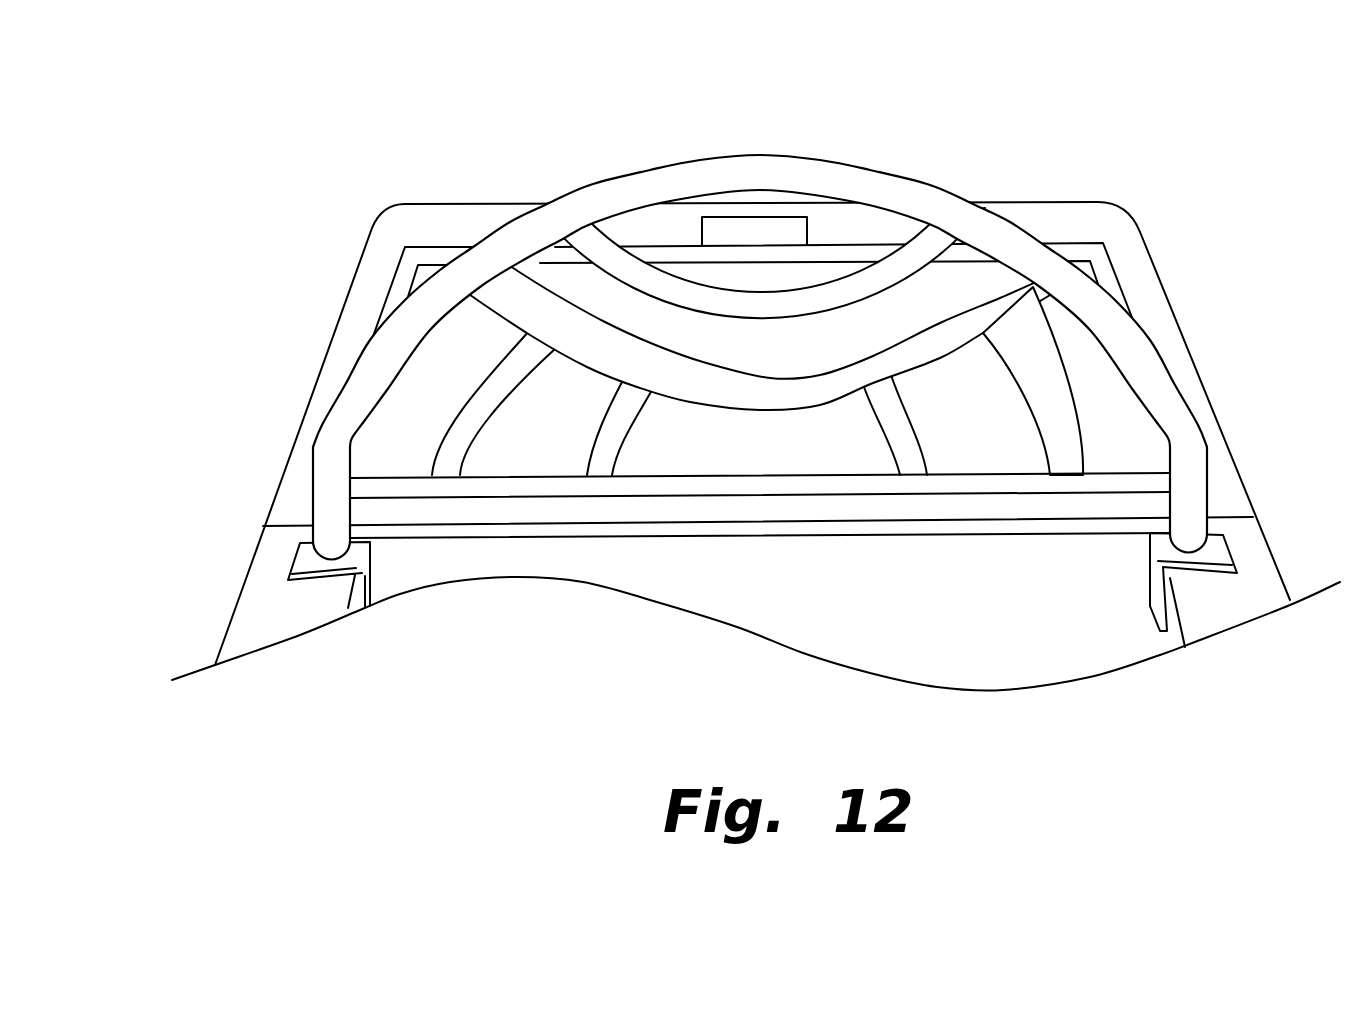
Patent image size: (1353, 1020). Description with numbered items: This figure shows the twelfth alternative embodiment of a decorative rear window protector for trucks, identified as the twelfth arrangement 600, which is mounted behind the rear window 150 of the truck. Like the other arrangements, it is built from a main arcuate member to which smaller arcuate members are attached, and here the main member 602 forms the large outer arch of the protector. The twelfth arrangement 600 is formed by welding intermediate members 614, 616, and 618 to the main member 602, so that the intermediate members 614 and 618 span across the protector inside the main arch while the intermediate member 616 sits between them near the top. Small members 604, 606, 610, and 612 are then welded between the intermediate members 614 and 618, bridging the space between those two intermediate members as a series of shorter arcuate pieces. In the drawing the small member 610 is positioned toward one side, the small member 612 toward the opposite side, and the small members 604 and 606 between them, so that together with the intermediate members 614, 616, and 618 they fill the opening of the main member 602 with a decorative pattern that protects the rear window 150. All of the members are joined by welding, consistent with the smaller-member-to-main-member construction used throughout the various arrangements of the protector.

The rear window 150 is at (1133, 320).
The twelfth arrangement 600 is at (989, 188).
The main arch 602 is at (611, 200).
The small member 604 is at (617, 433).
The right center rib 606 is at (897, 447).
The small member 610 is at (450, 466).
The small member 612 is at (1027, 417).
The intermediate member 614 is at (830, 387).
The intermediate member 616 is at (690, 297).
The intermediate member 618 is at (543, 488).